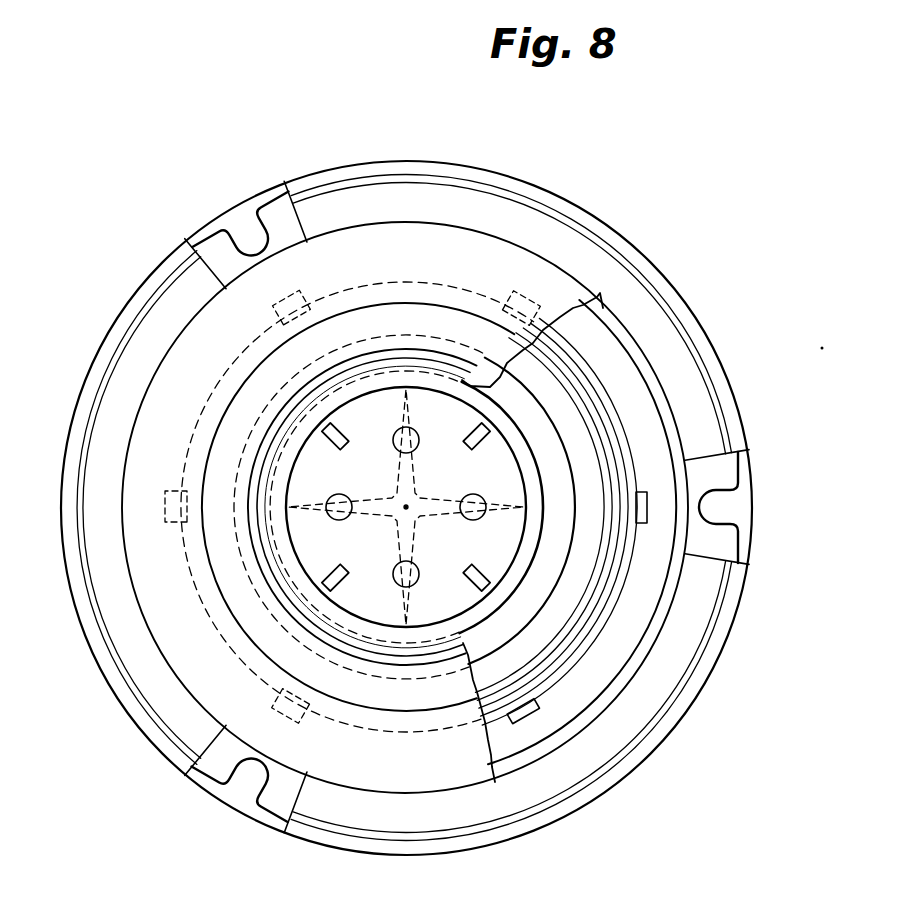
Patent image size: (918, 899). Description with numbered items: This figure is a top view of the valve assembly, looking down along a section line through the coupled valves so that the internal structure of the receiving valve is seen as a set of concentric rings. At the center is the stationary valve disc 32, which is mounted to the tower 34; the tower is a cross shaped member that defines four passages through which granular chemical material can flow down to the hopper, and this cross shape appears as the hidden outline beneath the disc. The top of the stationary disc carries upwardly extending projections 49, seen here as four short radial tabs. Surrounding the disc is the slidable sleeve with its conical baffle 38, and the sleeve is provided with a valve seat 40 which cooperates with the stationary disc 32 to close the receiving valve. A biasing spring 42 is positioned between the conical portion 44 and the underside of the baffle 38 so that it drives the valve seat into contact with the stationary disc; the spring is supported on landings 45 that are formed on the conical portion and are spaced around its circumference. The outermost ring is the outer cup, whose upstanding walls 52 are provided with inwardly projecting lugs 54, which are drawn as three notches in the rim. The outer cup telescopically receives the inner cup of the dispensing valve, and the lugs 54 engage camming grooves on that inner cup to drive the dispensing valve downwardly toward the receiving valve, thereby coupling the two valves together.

The stationary valve disc 32 is at (362, 481).
The tower 34 is at (448, 497).
The conical baffle 38 is at (424, 258).
The valve seat 40 is at (293, 556).
The biasing spring 42 is at (618, 578).
The conical portion 44 is at (637, 613).
The landings 45 is at (296, 298).
The upwardly extending projections 49 is at (347, 424).
The upstanding walls 52 is at (738, 573).
The inwardly projecting lugs 54 is at (257, 233).